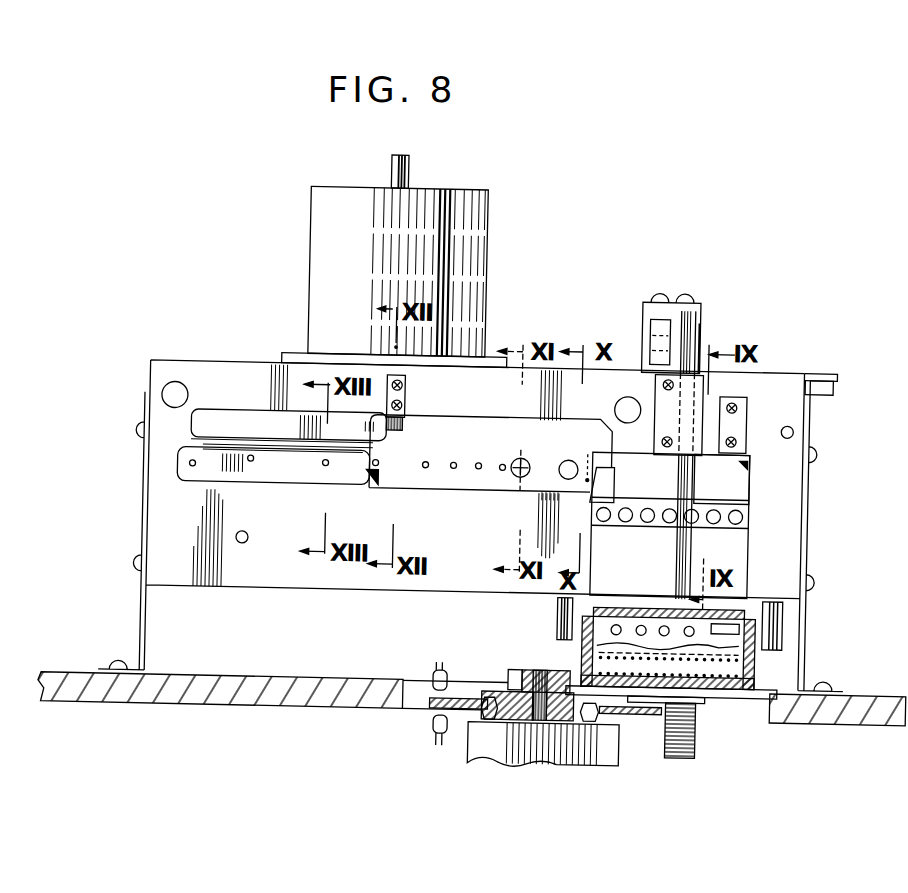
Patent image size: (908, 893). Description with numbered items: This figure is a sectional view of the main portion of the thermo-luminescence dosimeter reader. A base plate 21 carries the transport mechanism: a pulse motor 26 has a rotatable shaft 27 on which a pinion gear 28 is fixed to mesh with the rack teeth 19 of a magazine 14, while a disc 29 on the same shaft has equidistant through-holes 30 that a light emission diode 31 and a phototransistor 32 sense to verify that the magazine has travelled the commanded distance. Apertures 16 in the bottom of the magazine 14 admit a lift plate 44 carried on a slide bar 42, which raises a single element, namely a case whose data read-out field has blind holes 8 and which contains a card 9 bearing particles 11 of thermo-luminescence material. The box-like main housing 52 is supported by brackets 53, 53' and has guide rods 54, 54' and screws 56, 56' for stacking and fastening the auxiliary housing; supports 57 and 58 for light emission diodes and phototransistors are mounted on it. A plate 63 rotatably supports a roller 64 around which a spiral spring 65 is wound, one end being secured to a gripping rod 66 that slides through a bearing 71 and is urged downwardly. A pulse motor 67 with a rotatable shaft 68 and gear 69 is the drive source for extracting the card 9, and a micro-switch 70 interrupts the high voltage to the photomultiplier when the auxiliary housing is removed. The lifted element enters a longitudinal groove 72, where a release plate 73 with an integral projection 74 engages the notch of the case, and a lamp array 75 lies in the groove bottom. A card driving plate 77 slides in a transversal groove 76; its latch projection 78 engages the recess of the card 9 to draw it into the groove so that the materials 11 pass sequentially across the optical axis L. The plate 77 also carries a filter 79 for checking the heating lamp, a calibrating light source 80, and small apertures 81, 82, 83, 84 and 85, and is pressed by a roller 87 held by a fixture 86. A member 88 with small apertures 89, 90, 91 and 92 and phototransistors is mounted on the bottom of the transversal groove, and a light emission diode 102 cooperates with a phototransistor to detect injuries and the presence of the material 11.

The blind holes 8 is at (722, 678).
The card 9 is at (752, 627).
The particles of thermo-luminescence material 11 is at (666, 614).
The magazine 14 is at (763, 679).
The apertures 16 is at (650, 705).
The rack teeth 19 is at (545, 662).
The base plate 21 is at (172, 704).
The pulse motor 26 is at (523, 757).
The rotatable shaft 27 is at (532, 662).
The pinion gear 28 is at (509, 668).
The disc 29 is at (630, 705).
The through-holes 30 is at (456, 706).
The light emission diode 31 is at (435, 718).
The phototransistor 32 is at (435, 668).
The slide bar 42 is at (699, 735).
The lift plate 44 is at (706, 692).
The main housing 52 is at (236, 362).
The bracket 53 is at (824, 621).
The bracket 53' is at (123, 617).
The guide rod 54 is at (186, 386).
The guide rod 54' is at (615, 398).
The screw 56 is at (260, 530).
The screw 56' is at (813, 432).
The support 57 is at (557, 612).
The support 58 is at (784, 630).
The plate 63 is at (803, 358).
The roller 64 is at (692, 334).
The spiral spring 65 is at (640, 322).
The gripping rod 66 is at (696, 338).
The pulse motor 67 is at (433, 190).
The rotatable shaft 68 is at (381, 160).
The gear 69 is at (381, 372).
The micro-switch 70 is at (829, 376).
The bearing 71 is at (656, 416).
The longitudinal groove 72 is at (740, 536).
The release plate 73 is at (744, 398).
The projection 74 is at (737, 456).
The lamp array 75 is at (742, 505).
The transversal groove 76 is at (240, 418).
The card driving plate 77 is at (482, 416).
The latch projection 78 is at (603, 455).
The filter 79 is at (527, 463).
The calibrating light source 80 is at (560, 455).
The small aperture 81 is at (376, 456).
The small aperture 82 is at (423, 462).
The small aperture 83 is at (451, 462).
The small aperture 84 is at (477, 462).
The small aperture 85 is at (498, 457).
The optical axis L is at (510, 452).
The fixture 86 is at (401, 388).
The roller 87 is at (400, 422).
The member 88 is at (293, 470).
The small aperture 89 is at (190, 465).
The small aperture 90 is at (248, 459).
The small aperture 91 is at (323, 462).
The small aperture 92 is at (372, 489).
The light emission diode 102 is at (582, 455).